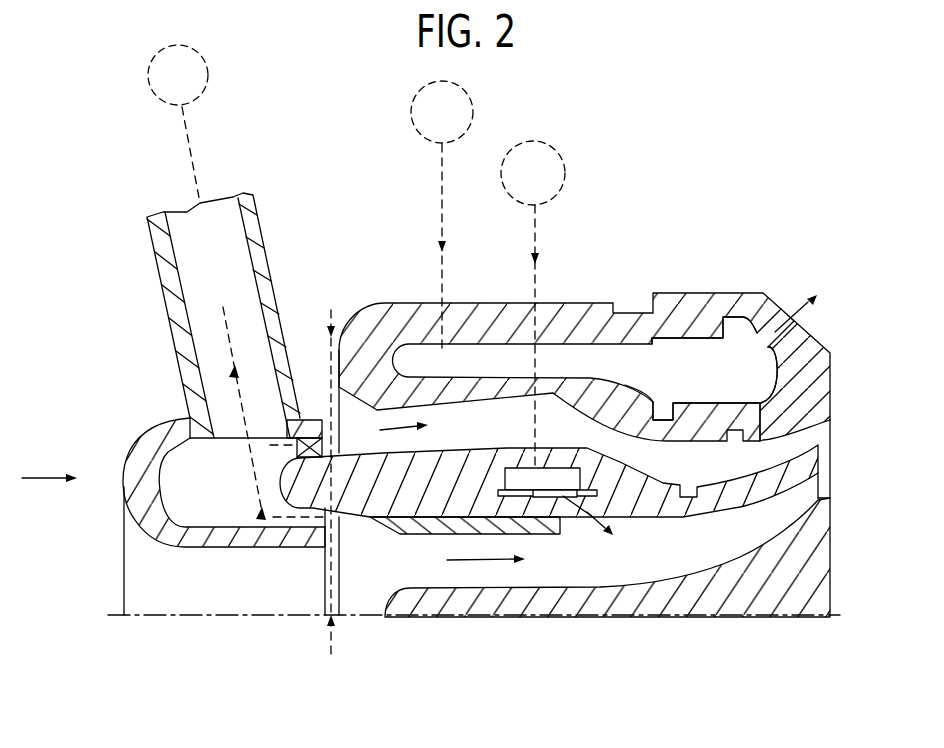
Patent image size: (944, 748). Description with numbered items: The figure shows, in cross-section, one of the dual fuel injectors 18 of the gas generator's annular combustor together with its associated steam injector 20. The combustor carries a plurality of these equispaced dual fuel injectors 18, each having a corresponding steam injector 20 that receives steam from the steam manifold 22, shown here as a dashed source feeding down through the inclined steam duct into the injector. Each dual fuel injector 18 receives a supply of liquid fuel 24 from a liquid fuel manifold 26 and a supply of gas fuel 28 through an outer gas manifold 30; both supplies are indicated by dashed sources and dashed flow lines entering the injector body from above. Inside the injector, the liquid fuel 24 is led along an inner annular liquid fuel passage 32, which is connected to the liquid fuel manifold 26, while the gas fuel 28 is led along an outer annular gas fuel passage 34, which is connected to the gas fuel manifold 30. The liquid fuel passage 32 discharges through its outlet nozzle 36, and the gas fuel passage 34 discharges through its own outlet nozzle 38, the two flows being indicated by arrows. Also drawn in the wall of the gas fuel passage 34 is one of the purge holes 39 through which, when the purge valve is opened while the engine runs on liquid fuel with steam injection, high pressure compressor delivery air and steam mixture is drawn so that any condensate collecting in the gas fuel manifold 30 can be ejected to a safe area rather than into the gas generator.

The dual fuel injector 18 is at (697, 266).
The steam injector 20 is at (285, 252).
The steam manifold 22 is at (208, 75).
The liquid fuel 24 is at (547, 238).
The liquid fuel manifold 26 is at (563, 170).
The gas fuel 28 is at (459, 250).
The gas fuel manifold 30 is at (418, 96).
The inner annular liquid fuel passage 32 is at (550, 477).
The outer annular gas fuel passage 34 is at (714, 368).
The outlet nozzle 36 is at (593, 513).
The outlet nozzle 38 is at (786, 333).
The purge hole 39 is at (650, 393).